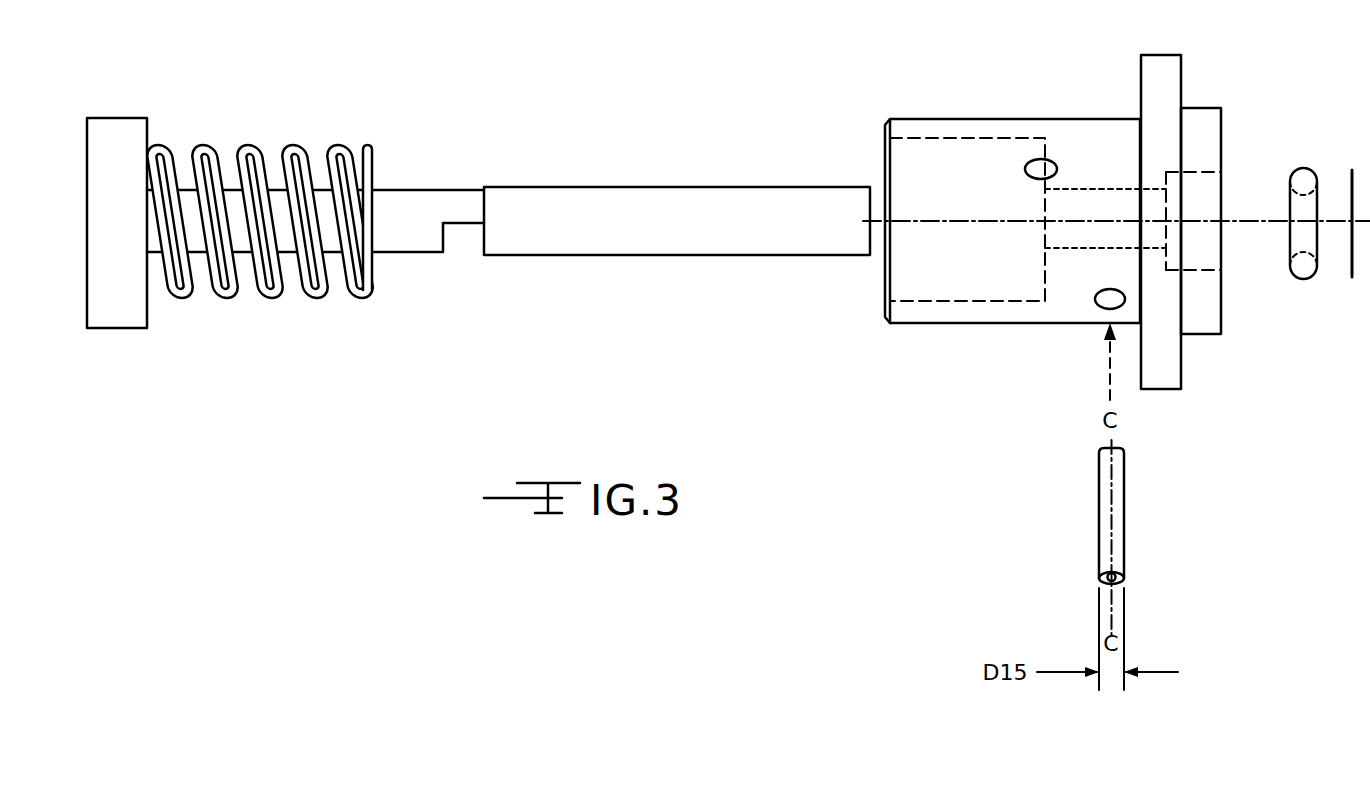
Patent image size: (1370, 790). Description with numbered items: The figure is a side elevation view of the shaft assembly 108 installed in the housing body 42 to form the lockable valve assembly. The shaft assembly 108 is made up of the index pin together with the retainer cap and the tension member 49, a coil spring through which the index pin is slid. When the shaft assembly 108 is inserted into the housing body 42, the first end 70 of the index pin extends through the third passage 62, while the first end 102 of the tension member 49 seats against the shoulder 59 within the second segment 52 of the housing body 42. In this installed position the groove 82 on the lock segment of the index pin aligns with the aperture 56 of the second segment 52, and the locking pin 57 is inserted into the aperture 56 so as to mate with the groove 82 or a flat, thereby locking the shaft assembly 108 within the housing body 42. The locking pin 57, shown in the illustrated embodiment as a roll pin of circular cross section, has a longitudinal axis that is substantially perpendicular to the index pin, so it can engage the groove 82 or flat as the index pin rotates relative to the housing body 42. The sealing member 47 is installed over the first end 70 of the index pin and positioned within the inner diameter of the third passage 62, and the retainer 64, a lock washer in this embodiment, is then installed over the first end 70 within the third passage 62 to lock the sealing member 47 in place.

The shaft assembly 108 is at (298, 209).
The tension member 49 is at (298, 266).
The first end of the tension member 102 is at (373, 292).
The groove 82 is at (457, 223).
The first end of the index pin 70 is at (852, 257).
The housing body 42 is at (922, 323).
The second segment of the housing body 52 is at (1003, 119).
The shoulder 59 is at (1052, 178).
The aperture 56 is at (1095, 300).
The third passage 62 is at (1193, 273).
The retainer 64 is at (1352, 178).
The sealing member 47 is at (1303, 281).
The locking pin 57 is at (1126, 520).